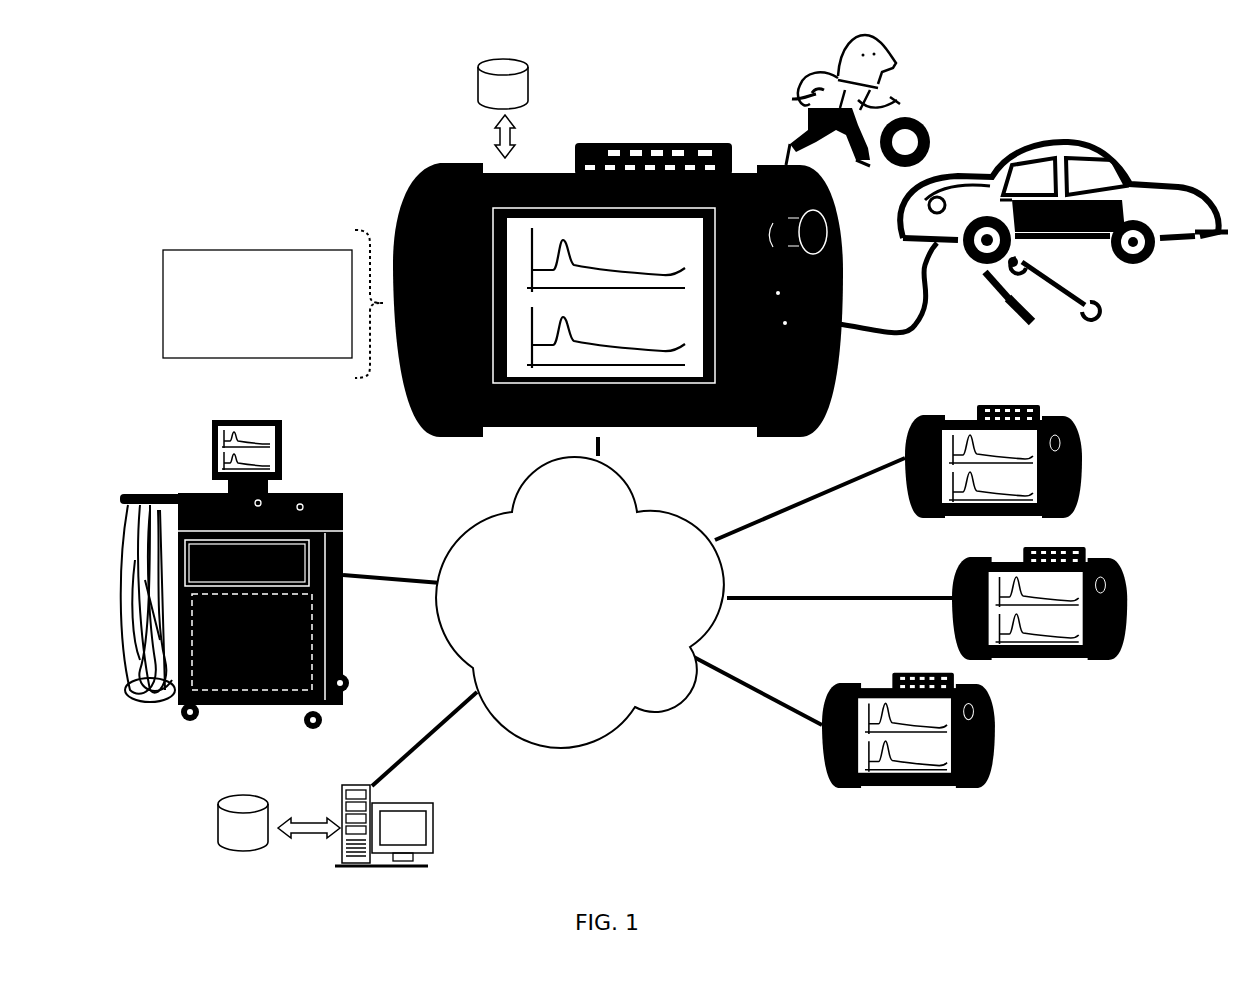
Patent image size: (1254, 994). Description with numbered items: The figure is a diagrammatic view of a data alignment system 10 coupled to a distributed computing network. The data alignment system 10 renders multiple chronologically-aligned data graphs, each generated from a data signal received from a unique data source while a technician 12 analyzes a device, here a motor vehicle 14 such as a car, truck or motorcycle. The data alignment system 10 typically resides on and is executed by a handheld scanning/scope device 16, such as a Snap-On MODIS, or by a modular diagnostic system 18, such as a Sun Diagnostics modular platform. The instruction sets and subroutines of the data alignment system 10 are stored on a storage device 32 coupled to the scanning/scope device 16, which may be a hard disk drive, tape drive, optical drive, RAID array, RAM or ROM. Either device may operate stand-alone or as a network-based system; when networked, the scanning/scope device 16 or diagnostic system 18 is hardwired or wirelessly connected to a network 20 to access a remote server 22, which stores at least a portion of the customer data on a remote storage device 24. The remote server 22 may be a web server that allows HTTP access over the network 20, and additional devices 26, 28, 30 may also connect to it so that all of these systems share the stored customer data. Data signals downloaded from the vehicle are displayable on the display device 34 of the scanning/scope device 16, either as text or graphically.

The data alignment system 10 is at (163, 287).
The technician 12 is at (785, 102).
The motor vehicle 14 is at (1012, 148).
The handheld scanning/scope device 16 is at (400, 415).
The modular diagnostic system 18 is at (343, 667).
The network 20 is at (440, 612).
The remote server 22 is at (340, 812).
The remote storage device 24 is at (217, 820).
The additional device 26 is at (1082, 442).
The additional device 28 is at (1127, 590).
The additional device 30 is at (995, 712).
The storage device 32 is at (478, 82).
The display device 34 is at (663, 426).